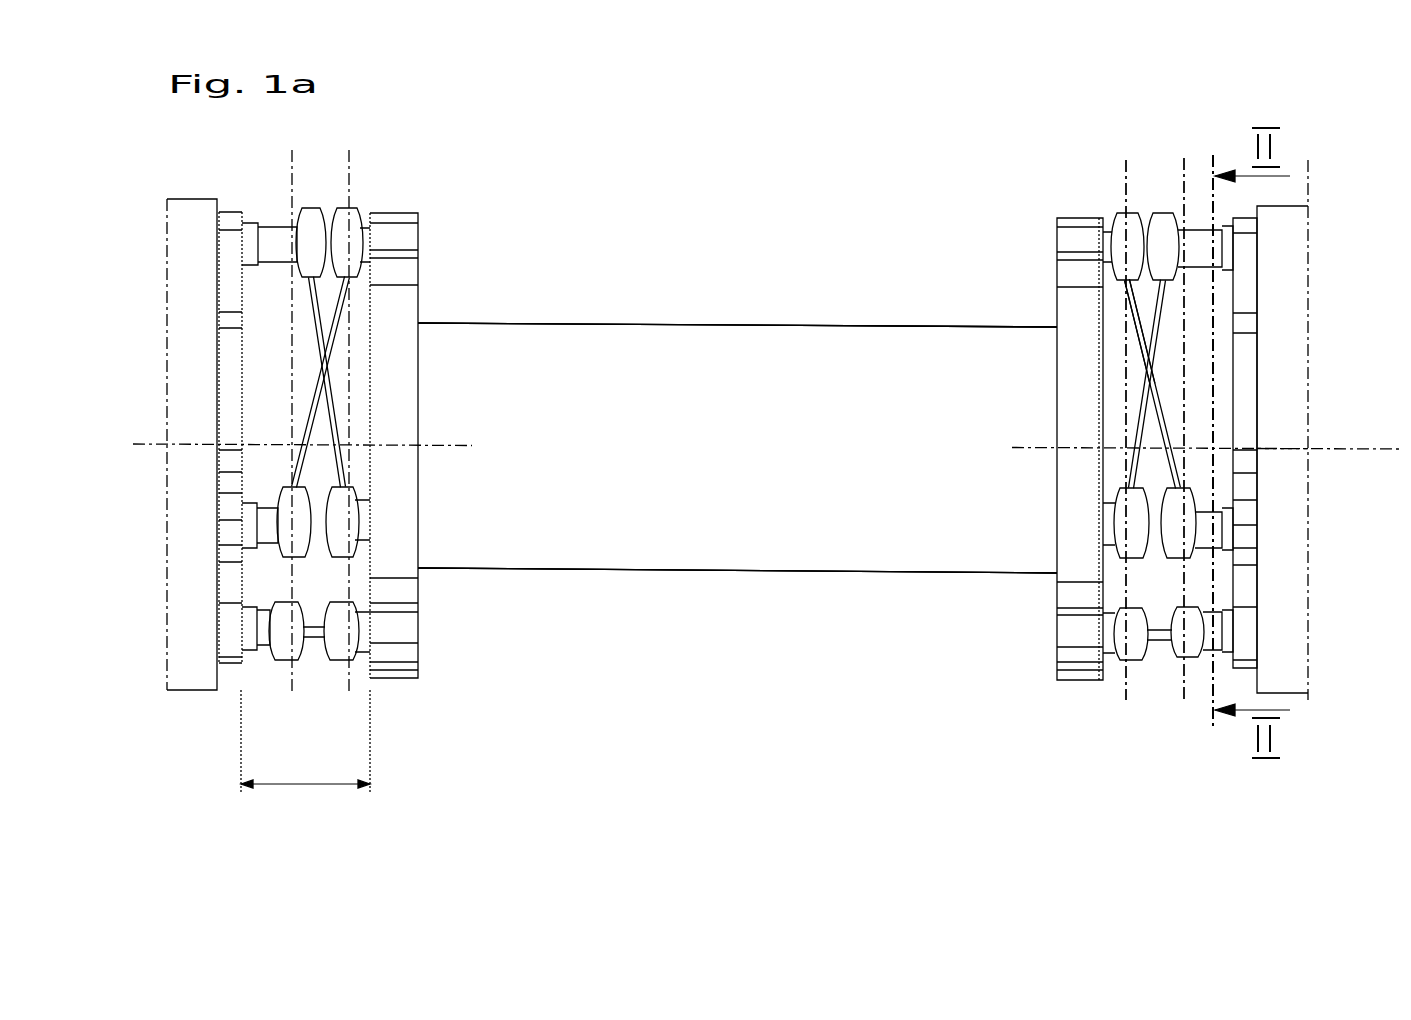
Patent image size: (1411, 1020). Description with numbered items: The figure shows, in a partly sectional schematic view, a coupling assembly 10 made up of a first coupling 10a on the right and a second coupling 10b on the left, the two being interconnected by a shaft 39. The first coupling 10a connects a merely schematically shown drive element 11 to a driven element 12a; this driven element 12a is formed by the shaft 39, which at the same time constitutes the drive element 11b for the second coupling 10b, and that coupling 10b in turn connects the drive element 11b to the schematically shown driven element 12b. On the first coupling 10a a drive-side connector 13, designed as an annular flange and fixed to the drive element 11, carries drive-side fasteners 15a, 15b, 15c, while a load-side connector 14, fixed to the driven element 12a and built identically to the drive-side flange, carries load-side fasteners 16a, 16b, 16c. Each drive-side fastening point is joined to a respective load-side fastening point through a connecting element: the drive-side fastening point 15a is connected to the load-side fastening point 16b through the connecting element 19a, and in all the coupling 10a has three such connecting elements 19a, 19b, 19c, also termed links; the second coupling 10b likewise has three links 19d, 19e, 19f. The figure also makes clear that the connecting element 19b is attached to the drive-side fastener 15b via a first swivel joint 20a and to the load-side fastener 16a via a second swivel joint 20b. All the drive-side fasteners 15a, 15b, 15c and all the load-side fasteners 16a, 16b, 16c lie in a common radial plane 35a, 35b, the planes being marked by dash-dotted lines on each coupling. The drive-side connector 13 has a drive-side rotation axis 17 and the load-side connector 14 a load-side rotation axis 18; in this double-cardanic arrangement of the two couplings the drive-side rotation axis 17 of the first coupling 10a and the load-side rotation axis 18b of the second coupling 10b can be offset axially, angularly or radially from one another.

The coupling assembly 10 is at (702, 670).
The first coupling 10a is at (1148, 150).
The second coupling 10b is at (262, 192).
The drive element 11 is at (1287, 265).
The drive element 11b is at (487, 372).
The driven element 12a is at (915, 530).
The driven element 12b is at (190, 298).
The drive-side connector 13 is at (1245, 646).
The load-side connector 14 is at (1073, 302).
The drive-side fastener 15a is at (1193, 228).
The drive-side fastener 15b is at (1206, 510).
The drive-side fastener 15c is at (1212, 620).
The load-side fastener 16a is at (1110, 242).
The load-side fastener 16b is at (1107, 537).
The load-side fastener 16c is at (1110, 640).
The drive-side rotation axis 17 is at (1273, 450).
The load-side rotation axis 18 is at (1030, 447).
The load-side rotation axis 18b is at (150, 443).
The connecting element 19a is at (1152, 318).
The connecting element 19b is at (1142, 343).
The connecting element 19c is at (1160, 645).
The link 19d is at (337, 302).
The link 19e is at (317, 293).
The link 19f is at (310, 664).
The first swivel joint 20a is at (1203, 538).
The second swivel joint 20b is at (1108, 277).
The radial plane 35a is at (350, 688).
The radial plane 35b is at (288, 680).
The shaft 39 is at (758, 383).